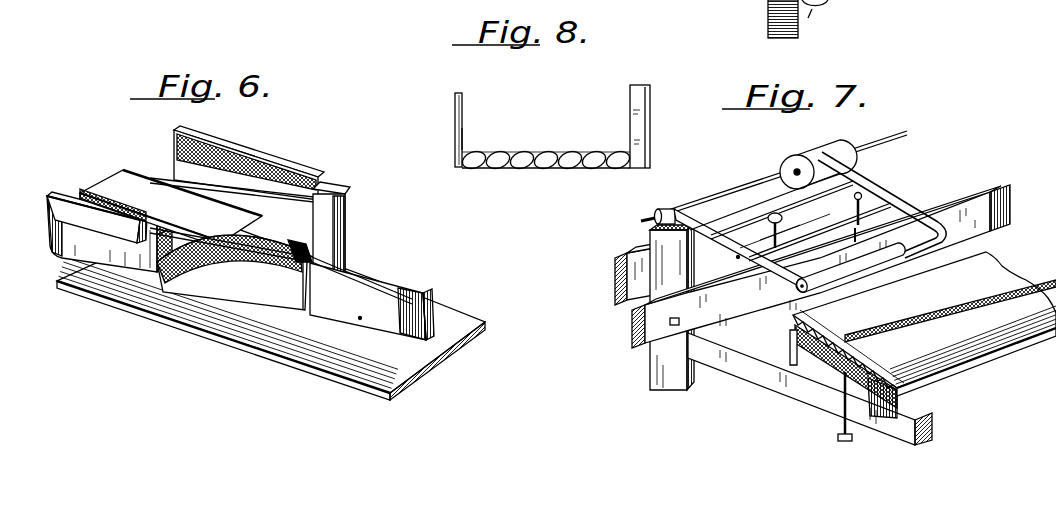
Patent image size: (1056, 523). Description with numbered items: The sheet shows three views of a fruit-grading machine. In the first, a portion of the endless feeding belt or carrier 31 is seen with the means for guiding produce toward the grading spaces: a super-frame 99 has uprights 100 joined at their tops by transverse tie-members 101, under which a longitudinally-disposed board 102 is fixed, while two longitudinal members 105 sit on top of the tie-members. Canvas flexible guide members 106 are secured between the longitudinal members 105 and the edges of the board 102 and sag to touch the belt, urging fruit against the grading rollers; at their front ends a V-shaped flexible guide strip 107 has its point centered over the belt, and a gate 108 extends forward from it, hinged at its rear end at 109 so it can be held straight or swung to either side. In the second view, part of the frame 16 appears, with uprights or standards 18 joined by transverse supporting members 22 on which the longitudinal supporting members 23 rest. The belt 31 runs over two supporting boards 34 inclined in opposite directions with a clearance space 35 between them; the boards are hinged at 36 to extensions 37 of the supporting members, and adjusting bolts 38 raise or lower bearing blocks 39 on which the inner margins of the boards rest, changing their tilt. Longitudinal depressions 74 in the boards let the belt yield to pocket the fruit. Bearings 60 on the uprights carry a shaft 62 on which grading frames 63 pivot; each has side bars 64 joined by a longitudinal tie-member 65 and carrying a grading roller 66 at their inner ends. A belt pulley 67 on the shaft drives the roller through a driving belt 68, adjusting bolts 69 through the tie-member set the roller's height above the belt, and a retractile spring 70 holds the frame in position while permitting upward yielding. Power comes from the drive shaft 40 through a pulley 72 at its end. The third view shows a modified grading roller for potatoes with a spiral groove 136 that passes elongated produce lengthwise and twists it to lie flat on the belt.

In FIG. 7, the frame 16 is at (686, 362).
In FIG. 7, the uprights or standards 18 is at (675, 387).
In FIG. 7, the transverse supporting members 22 is at (821, 266).
In FIG. 7, the longitudinal supporting members 23 is at (768, 366).
In FIG. 6, the endless feeding belt or carrier 31 is at (463, 316).
In FIG. 7, the endless feeding belt or carrier 31 is at (924, 324).
In FIG. 6, the supporting boards 34 is at (470, 343).
In FIG. 7, the supporting boards 34 is at (953, 373).
In FIG. 6, the clearance space 35 is at (441, 364).
In FIG. 7, the clearance space 35 is at (851, 346).
In FIG. 7, the hinge (pivotal connection) 36 is at (792, 338).
In FIG. 7, the extensions 37 is at (838, 390).
In FIG. 7, the adjusting bolts 38 is at (853, 424).
In FIG. 7, the bearing block 39 is at (851, 362).
In FIG. 7, the drive shaft 40 is at (824, 6).
In FIG. 7, the bearings 60 is at (666, 214).
In FIG. 7, the shaft 62 is at (748, 191).
In FIG. 8, the grading frames 63 is at (457, 113).
In FIG. 7, the grading frames 63 is at (748, 233).
In FIG. 8, the side bars 64 is at (463, 130).
In FIG. 7, the side bars 64 is at (731, 249).
In FIG. 7, the longitudinal tie-member 65 is at (741, 246).
In FIG. 7, the grading roller 66 is at (900, 250).
In FIG. 7, the belt pulley 67 is at (787, 162).
In FIG. 8, the driving belt 68 is at (630, 116).
In FIG. 7, the driving belt 68 is at (898, 199).
In FIG. 7, the adjusting bolts 69 is at (780, 210).
In FIG. 7, the retractile spring 70 is at (893, 262).
In FIG. 7, the pulley 72 is at (799, 22).
In FIG. 7, the longitudinal depressions 74 is at (865, 349).
In FIG. 6, the super-frame 99 is at (349, 189).
In FIG. 6, the uprights 100 is at (346, 227).
In FIG. 6, the transverse tie-members 101 is at (304, 192).
In FIG. 6, the longitudinally-disposed board 102 is at (118, 195).
In FIG. 6, the longitudinal members 105 is at (98, 226).
In FIG. 6, the flexible guide members 106 is at (80, 196).
In FIG. 6, the V-shaped flexible guide strip 107 is at (188, 291).
In FIG. 6, the gate 108 is at (370, 297).
In FIG. 6, the hinge 109 is at (312, 258).
In FIG. 8, the spiral groove 136 is at (554, 172).